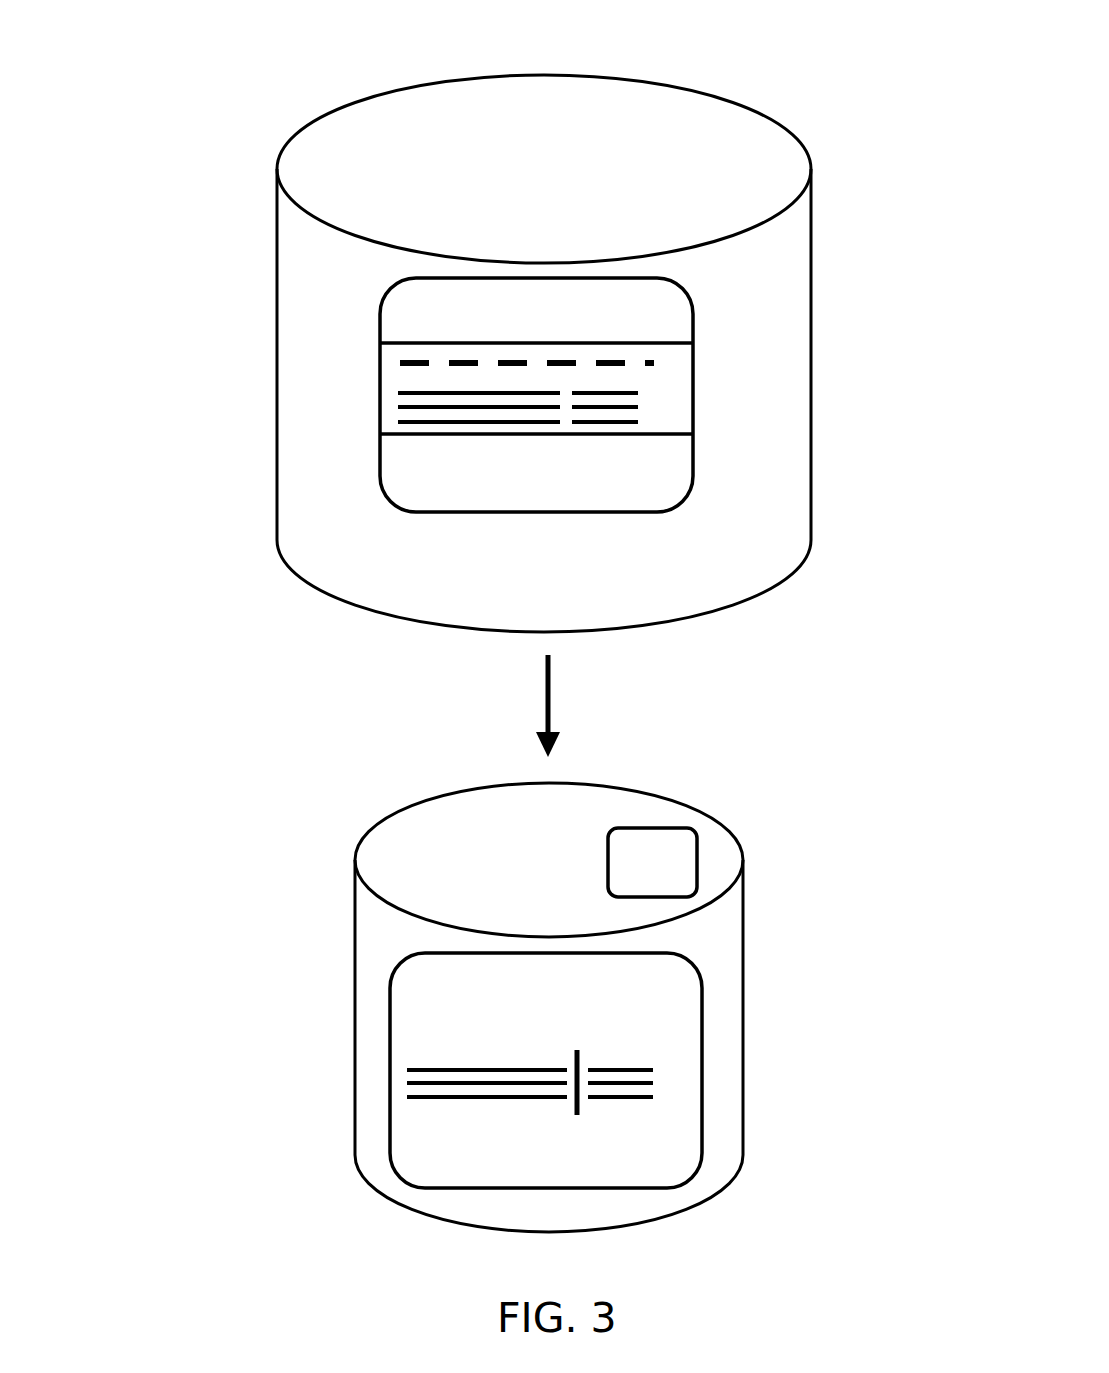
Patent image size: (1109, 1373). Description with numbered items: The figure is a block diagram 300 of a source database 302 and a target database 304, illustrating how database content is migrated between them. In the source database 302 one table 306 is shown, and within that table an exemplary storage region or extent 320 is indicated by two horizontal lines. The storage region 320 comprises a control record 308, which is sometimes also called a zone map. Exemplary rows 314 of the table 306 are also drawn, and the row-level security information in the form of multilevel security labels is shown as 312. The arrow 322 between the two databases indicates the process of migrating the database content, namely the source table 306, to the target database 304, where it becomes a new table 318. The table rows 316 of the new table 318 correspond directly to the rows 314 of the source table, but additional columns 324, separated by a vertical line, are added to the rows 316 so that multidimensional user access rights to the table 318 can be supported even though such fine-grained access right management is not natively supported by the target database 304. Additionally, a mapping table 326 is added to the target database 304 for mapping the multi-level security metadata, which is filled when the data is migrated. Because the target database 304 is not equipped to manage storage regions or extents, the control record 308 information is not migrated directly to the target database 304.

The block diagram 300 is at (168, 100).
The source database 302 is at (541, 168).
The target database 304 is at (558, 885).
The table 306 is at (692, 292).
The control record 308 is at (672, 364).
The row-level security information 312 is at (659, 421).
The rows 314 is at (514, 412).
The table rows 316 is at (452, 1053).
The new table 318 is at (694, 957).
The storage region/extent 320 is at (413, 436).
The arrow 322 is at (567, 720).
The additional columns 324 is at (623, 1049).
The mapping table 326 is at (684, 879).